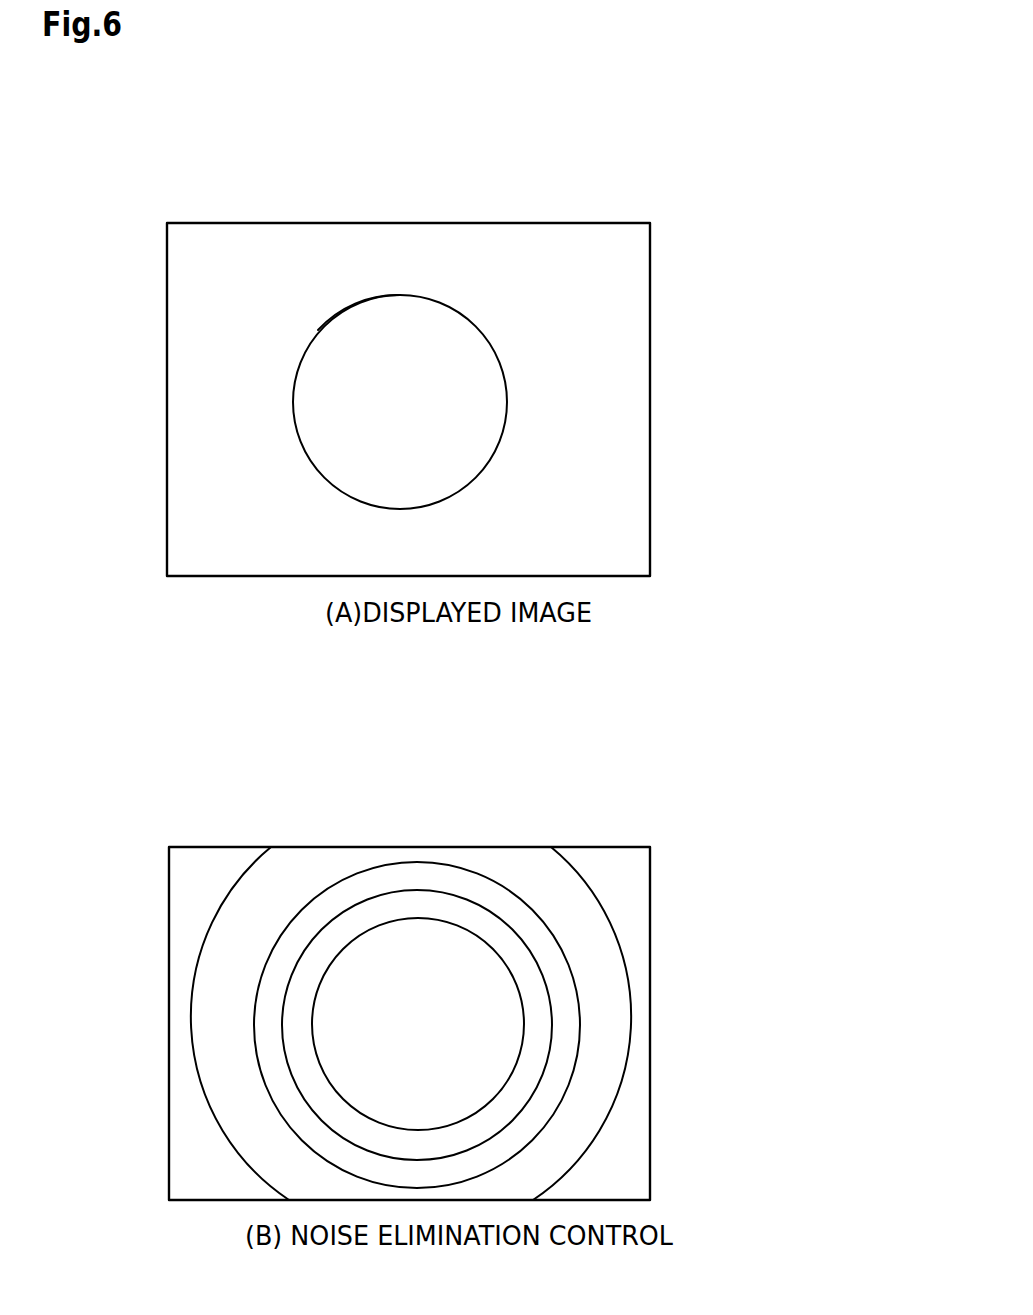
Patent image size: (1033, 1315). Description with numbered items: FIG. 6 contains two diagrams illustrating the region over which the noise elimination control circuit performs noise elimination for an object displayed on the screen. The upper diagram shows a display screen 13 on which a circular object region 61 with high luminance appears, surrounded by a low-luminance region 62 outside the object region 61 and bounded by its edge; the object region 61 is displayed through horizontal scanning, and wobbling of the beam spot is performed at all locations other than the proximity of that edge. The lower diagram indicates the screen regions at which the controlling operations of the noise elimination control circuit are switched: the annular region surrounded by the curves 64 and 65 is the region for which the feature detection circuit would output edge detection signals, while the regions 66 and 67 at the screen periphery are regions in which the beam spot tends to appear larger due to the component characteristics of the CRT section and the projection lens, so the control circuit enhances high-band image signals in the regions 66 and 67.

The display screen 13 is at (492, 222).
The circular object region 61 is at (473, 364).
The background region 62 is at (605, 423).
The curve 64 is at (388, 860).
The curve 65 is at (437, 917).
The screen peripheral region 66 is at (632, 892).
The screen peripheral region 67 is at (228, 1185).